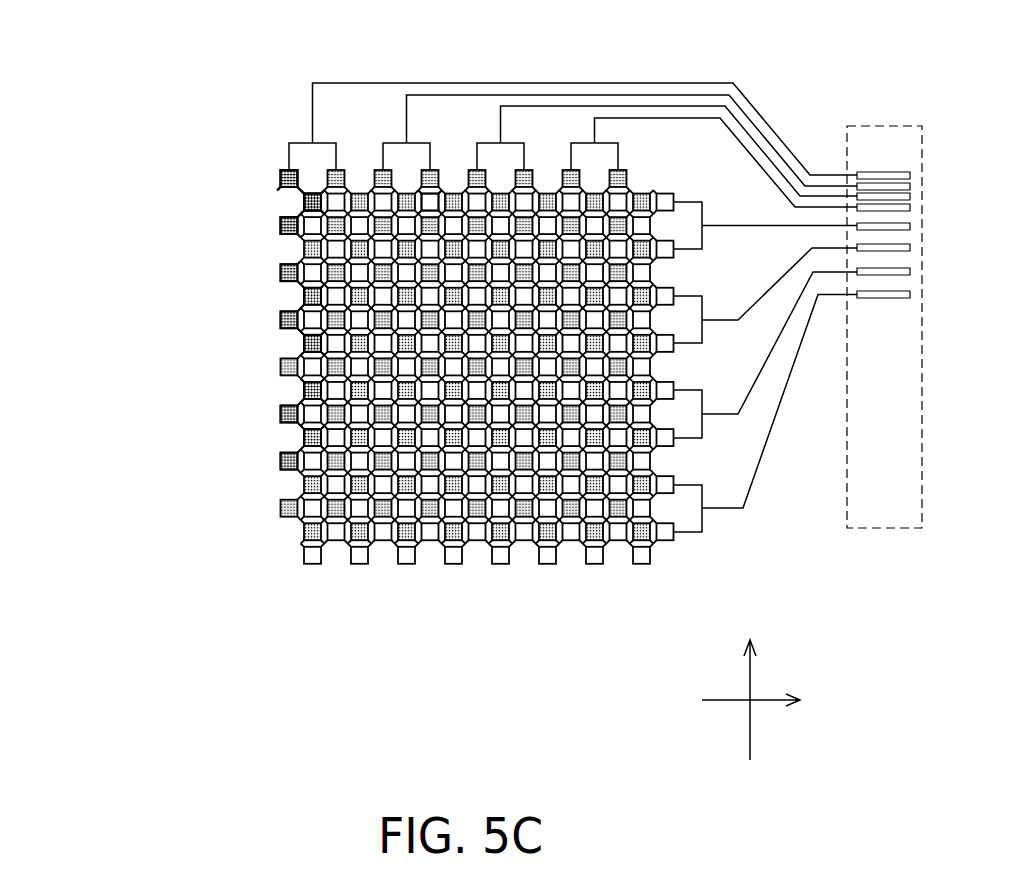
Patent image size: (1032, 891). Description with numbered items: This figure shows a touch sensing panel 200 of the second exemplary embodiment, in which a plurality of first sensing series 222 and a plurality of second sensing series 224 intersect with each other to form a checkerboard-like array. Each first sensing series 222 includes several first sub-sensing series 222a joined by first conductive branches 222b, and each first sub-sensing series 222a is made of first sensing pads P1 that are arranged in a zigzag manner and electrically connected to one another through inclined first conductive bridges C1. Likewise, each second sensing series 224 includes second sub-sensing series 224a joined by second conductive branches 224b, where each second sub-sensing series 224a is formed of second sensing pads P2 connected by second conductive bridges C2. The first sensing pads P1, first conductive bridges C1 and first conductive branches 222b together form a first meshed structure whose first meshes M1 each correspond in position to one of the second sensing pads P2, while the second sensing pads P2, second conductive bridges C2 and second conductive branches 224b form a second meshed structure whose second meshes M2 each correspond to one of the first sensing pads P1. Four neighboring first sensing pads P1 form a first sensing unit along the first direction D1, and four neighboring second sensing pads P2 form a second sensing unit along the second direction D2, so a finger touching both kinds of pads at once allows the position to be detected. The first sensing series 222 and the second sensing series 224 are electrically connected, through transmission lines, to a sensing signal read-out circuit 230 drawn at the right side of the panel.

The touch sensing panel 200 is at (82, 235).
The first sensing series 222 is at (150, 193).
The first sub-sensing series 222a is at (229, 170).
The first conductive branch 222b is at (281, 316).
The second sensing series 224 is at (147, 373).
The second sub-sensing series 224a is at (222, 347).
The second conductive branch 224b is at (300, 451).
The first sensing pad P1 is at (302, 202).
The first conductive bridge C1 is at (300, 237).
The second conductive bridge C2 is at (300, 349).
The second sensing pad P2 is at (300, 391).
The first mesh M1 is at (347, 191).
The second mesh M2 is at (444, 212).
The sensing signal read-out circuit 230 is at (891, 126).
The first direction D1 is at (748, 681).
The second direction D2 is at (767, 701).